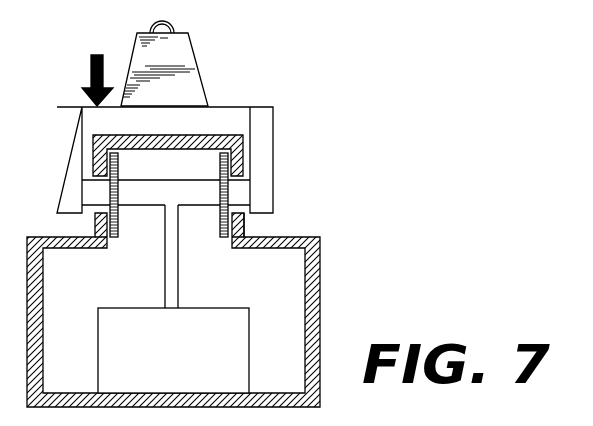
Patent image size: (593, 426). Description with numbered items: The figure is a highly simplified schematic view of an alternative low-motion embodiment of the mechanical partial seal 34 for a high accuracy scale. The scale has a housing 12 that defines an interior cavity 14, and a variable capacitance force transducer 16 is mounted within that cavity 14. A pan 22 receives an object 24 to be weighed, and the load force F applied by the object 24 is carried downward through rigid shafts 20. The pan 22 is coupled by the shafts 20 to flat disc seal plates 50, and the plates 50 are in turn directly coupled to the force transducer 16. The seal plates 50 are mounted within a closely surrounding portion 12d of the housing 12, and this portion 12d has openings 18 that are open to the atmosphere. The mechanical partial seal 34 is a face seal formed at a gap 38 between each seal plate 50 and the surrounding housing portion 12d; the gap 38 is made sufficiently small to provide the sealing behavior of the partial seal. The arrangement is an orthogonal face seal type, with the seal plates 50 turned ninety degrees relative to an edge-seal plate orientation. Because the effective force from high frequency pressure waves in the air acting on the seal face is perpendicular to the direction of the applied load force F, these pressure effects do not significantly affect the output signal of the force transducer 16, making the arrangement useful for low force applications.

The housing 12 is at (328, 302).
The closely surrounding portion of the housing 12d is at (254, 218).
The interior cavity 14 is at (282, 307).
The variable capacitance force transducer 16 is at (97, 335).
The openings 18 is at (91, 173).
The shafts 20 is at (93, 195).
The pan 22 is at (281, 128).
The object to be weighed 24 is at (182, 53).
The mechanical partial seal 34 is at (213, 167).
The gap 38 is at (116, 240).
The seal plates 50 is at (119, 217).
The applied force F is at (92, 71).